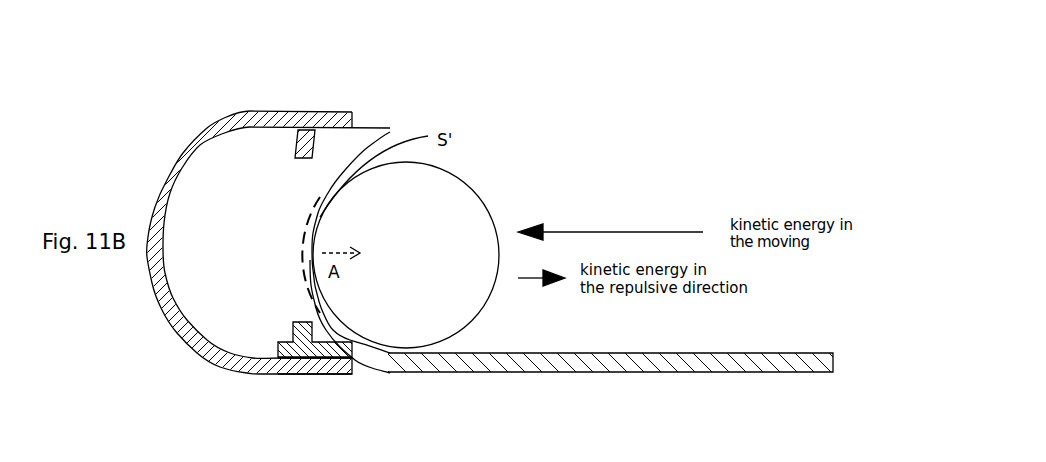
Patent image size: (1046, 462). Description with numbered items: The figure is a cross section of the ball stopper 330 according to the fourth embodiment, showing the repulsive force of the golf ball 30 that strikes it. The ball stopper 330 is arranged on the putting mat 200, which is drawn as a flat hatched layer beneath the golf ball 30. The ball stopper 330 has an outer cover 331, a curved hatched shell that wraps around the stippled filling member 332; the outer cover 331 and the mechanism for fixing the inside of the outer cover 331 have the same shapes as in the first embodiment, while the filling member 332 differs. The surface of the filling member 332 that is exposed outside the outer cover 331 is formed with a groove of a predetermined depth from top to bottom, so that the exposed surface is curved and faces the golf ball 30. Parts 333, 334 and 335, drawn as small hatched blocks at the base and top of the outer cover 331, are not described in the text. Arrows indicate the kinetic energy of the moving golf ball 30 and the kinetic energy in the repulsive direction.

The ball stopper 330 is at (185, 110).
The outer cover 331 is at (277, 108).
The filling member 332 is at (368, 142).
The support block 333 is at (303, 375).
The base block 334 is at (337, 369).
The retaining pin 335 is at (299, 128).
The golf ball 30 is at (453, 195).
The putting mat 200 is at (678, 360).